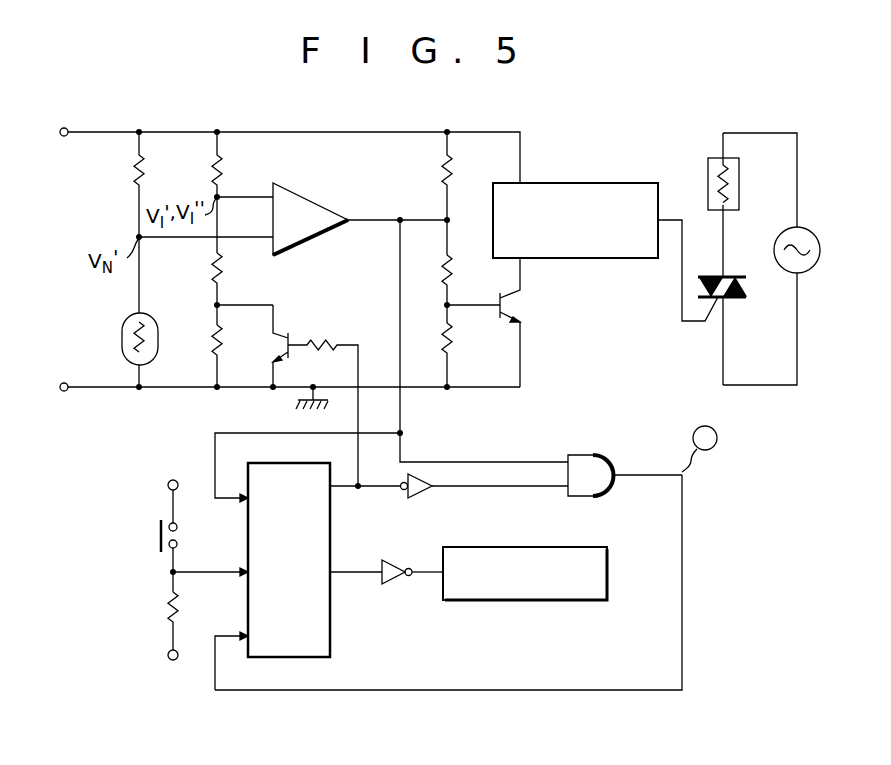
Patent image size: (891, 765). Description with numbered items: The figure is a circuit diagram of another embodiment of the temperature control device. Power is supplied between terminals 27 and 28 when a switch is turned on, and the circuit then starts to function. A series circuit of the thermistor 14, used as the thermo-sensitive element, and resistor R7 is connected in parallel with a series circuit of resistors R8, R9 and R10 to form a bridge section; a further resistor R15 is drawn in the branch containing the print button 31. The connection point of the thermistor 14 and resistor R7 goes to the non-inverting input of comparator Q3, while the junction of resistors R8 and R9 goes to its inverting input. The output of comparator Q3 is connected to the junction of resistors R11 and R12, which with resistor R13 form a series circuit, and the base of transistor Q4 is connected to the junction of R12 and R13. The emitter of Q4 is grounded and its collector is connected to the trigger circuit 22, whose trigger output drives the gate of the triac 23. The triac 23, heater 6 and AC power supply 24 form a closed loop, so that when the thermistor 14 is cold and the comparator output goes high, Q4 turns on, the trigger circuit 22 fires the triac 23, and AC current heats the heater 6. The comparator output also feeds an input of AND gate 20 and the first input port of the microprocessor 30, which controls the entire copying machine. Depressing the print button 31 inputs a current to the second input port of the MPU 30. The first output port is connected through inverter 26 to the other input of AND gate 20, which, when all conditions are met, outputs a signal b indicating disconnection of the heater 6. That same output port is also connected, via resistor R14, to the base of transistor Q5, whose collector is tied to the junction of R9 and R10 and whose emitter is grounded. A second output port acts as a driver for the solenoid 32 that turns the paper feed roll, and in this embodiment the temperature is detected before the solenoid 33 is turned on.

The terminal 27 is at (65, 128).
The terminal 28 is at (66, 391).
The thermistor 14 is at (122, 344).
The heater 6 is at (708, 162).
The trigger circuit 22 is at (582, 183).
The triac 23 is at (748, 296).
The AC power supply 24 is at (814, 266).
The AND gate 20 is at (591, 455).
The inverter 26 is at (430, 489).
The microprocessor (MPU) 30 is at (333, 627).
The print button 31 is at (160, 535).
The solenoid 32 is at (396, 560).
The solenoid 33 is at (533, 547).
The signal b is at (699, 449).
The resistor R7 is at (145, 172).
The resistor R8 is at (220, 172).
The resistor R9 is at (213, 273).
The resistor R10 is at (213, 348).
The resistor R11 is at (438, 176).
The resistor R12 is at (459, 272).
The resistor R13 is at (453, 350).
The resistor R14 is at (328, 343).
The resistor R15 is at (168, 592).
The comparator Q3 is at (304, 200).
The transistor Q4 is at (516, 298).
The transistor Q5 is at (283, 332).